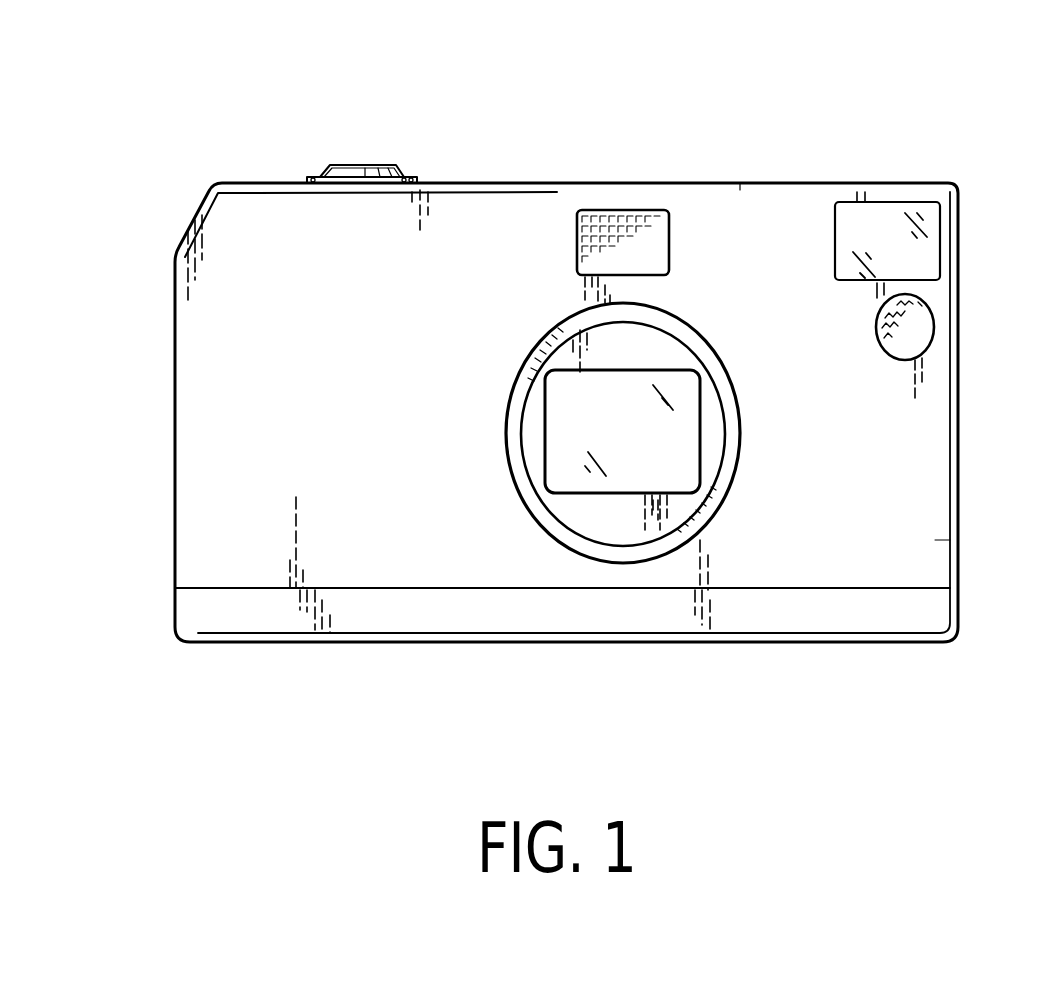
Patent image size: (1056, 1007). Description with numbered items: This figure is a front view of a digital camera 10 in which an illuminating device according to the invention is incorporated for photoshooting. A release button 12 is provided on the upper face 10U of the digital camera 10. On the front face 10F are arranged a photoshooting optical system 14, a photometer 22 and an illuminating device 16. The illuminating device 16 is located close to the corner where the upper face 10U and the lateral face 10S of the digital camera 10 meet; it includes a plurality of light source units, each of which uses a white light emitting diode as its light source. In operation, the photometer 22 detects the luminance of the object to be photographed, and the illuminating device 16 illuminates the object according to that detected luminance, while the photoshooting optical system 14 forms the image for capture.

The digital camera 10 is at (641, 112).
The upper face 10U is at (762, 183).
The lateral face 10S is at (960, 438).
The front face 10F is at (935, 540).
The release button 12 is at (362, 170).
The photoshooting optical system 14 is at (506, 438).
The illuminating device 16 is at (886, 202).
The photometer 22 is at (935, 327).